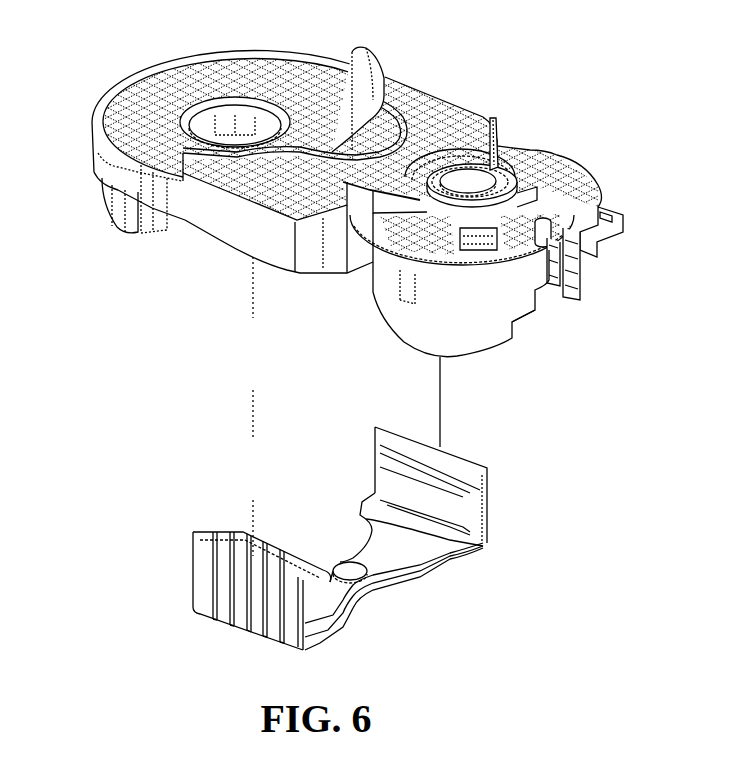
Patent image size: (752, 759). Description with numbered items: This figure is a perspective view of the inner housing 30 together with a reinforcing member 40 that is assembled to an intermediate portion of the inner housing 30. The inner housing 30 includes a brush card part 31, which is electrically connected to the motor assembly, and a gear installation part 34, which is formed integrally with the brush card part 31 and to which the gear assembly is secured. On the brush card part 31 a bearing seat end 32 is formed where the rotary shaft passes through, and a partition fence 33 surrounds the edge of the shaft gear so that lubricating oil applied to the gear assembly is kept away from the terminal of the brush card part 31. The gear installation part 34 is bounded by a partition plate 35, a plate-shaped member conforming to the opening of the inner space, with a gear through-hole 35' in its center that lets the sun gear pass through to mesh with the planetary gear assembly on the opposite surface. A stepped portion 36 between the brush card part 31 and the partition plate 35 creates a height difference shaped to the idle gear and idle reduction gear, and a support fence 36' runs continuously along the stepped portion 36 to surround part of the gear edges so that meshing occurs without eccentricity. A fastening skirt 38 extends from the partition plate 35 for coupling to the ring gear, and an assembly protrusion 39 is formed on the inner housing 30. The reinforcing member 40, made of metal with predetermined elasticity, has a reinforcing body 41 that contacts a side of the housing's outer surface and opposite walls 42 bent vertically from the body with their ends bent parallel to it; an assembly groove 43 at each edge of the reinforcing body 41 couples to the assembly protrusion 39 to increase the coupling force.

The inner housing 30 is at (455, 95).
The brush card part 31 is at (503, 343).
The bearing seat end 32 is at (520, 173).
The partition fence 33 is at (503, 143).
The gear installation part 34 is at (93, 168).
The partition plate 35 is at (250, 96).
The gear through-hole 35' is at (235, 77).
The stepped portion 36 is at (155, 223).
The support fence 36' is at (388, 76).
The fastening skirt 38 is at (118, 229).
The assembly protrusion 39 is at (232, 252).
The reinforcing member 40 is at (492, 543).
The reinforcing body 41 is at (407, 580).
The walls 42 is at (385, 482).
The assembly groove 43 is at (434, 518).